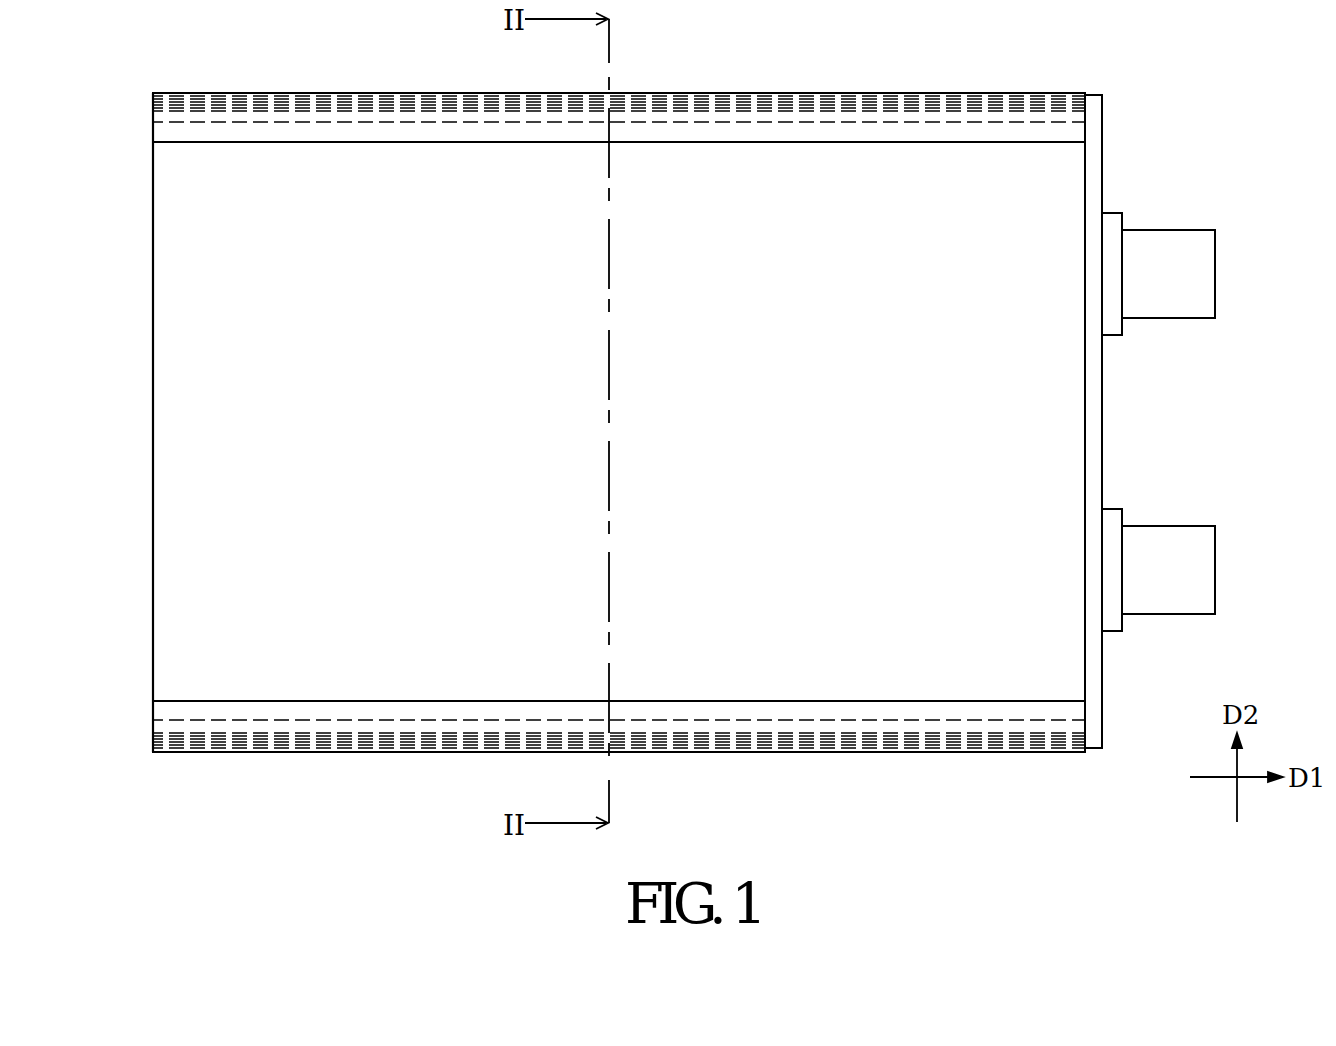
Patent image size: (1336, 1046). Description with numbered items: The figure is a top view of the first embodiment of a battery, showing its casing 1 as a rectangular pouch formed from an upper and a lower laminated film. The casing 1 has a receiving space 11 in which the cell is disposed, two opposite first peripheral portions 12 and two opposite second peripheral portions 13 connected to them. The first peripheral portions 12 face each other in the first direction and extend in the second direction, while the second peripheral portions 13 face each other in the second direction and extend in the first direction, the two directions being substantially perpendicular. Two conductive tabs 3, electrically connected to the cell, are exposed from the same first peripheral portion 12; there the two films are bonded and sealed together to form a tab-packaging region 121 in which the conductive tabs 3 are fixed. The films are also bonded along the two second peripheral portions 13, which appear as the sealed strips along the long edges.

The casing 1 is at (1106, 74).
The receiving space 11 is at (1062, 184).
The first peripheral portion 12 is at (152, 443).
The tab-packaging region 121 is at (1093, 421).
The second peripheral portion 13 is at (923, 93).
The conductive tab 3 is at (1175, 241).